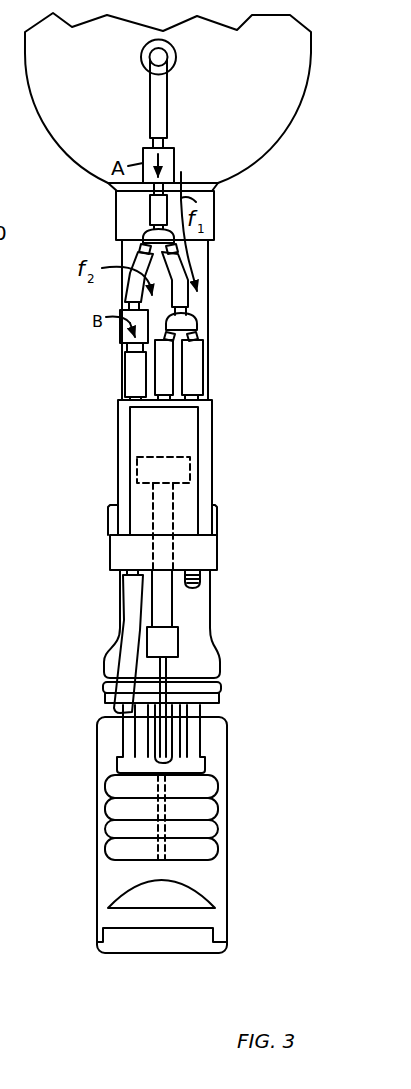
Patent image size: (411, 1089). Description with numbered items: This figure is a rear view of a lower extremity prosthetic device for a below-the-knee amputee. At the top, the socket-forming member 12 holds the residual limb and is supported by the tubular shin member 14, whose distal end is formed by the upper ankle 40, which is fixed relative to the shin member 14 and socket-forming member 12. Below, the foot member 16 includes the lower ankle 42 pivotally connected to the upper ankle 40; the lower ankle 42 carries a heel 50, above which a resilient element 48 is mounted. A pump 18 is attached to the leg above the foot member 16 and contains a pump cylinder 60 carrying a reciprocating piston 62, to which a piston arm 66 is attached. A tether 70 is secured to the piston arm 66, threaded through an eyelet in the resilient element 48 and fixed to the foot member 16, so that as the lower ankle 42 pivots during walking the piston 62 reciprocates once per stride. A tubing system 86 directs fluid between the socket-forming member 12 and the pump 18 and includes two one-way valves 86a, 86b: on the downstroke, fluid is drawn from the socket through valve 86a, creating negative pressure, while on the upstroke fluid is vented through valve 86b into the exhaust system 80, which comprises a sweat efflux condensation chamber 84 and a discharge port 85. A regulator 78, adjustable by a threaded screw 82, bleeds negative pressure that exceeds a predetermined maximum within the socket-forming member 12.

The socket-forming member 12 is at (286, 134).
The shin member 14 is at (212, 293).
The foot member 16 is at (233, 800).
The pump 18 is at (215, 417).
The upper ankle 40 is at (210, 693).
The lower ankle 42 is at (112, 879).
The resilient element 48 is at (118, 811).
The heel 50 is at (222, 945).
The pump cylinder 60 is at (189, 509).
The piston 62 is at (136, 475).
The piston arm 66 is at (163, 602).
The tether 70 is at (162, 740).
The regulator 78 is at (205, 452).
The exhaust system 80 is at (119, 435).
The threaded screw 82 is at (205, 578).
The sweat efflux condensation chamber 84 is at (108, 507).
The discharge port 85 is at (122, 717).
The tubing system 86 is at (112, 292).
The one-way valve 86a is at (178, 162).
The one-way valve 86b is at (121, 334).